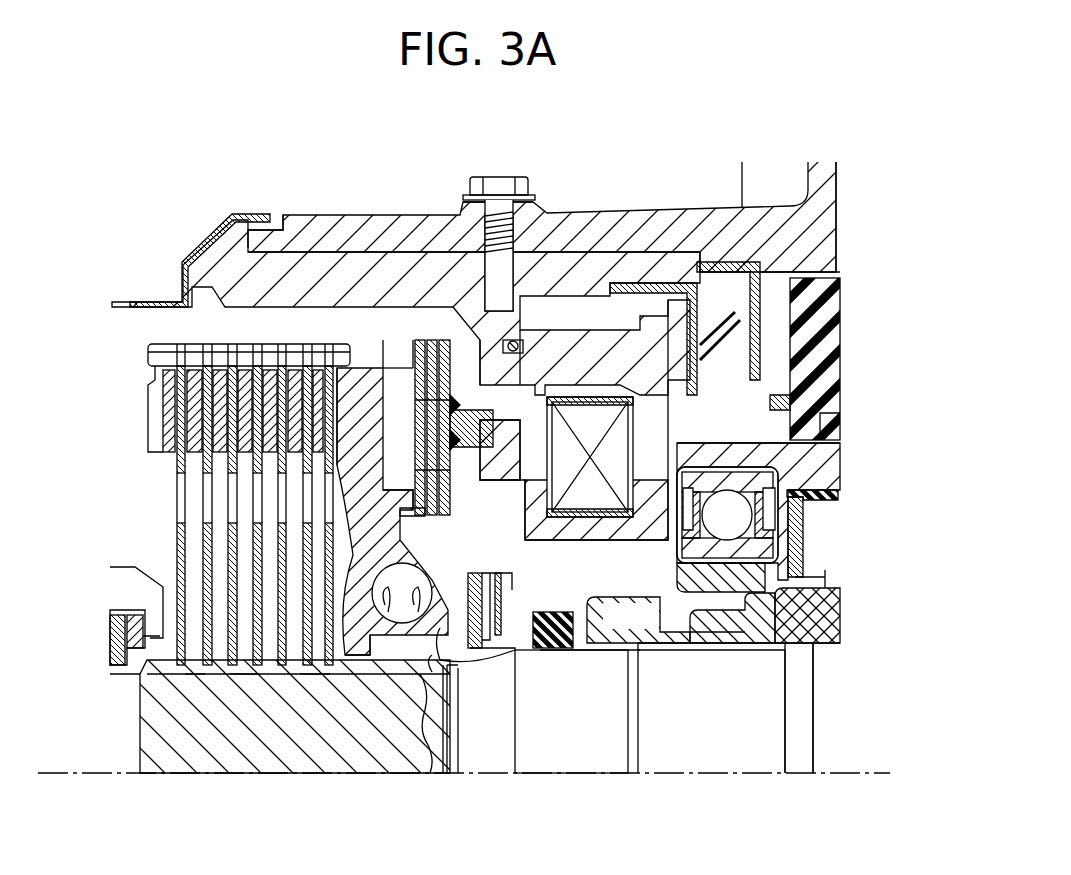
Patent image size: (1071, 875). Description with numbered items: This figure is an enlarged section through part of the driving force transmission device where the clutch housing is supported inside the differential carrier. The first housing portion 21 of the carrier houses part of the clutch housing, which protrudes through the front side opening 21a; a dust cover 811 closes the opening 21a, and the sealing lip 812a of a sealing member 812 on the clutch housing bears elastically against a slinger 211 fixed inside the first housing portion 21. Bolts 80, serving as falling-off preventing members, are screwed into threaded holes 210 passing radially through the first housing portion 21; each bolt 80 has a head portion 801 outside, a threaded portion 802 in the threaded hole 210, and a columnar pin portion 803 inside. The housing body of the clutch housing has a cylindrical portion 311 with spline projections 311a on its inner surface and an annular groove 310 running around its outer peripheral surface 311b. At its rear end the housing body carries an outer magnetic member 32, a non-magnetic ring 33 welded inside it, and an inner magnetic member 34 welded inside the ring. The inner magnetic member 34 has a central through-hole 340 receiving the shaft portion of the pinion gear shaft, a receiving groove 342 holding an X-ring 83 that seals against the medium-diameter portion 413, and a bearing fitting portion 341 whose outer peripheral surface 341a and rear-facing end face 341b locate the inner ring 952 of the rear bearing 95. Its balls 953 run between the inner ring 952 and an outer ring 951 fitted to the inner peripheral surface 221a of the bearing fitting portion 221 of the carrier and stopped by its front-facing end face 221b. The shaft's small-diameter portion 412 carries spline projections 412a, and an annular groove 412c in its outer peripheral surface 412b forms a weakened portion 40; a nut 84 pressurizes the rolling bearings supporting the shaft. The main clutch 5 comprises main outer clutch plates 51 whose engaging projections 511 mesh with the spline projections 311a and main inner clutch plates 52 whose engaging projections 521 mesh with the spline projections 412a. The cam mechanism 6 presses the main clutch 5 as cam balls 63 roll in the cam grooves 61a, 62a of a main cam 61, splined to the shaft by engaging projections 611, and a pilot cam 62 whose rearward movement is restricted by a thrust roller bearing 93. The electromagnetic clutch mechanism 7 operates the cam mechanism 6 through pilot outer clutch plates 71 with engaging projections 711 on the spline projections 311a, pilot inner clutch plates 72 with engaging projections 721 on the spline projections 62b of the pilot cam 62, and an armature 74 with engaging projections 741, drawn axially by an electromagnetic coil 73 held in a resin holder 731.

The first housing portion 21 is at (405, 232).
The front side opening 21a is at (232, 238).
The slinger 211 is at (700, 360).
The threaded hole 210 is at (518, 280).
The bolt 80 is at (470, 198).
The head portion 801 is at (503, 185).
The threaded portion 802 is at (496, 230).
The pin portion 803 is at (487, 292).
The cylindrical portion 311 is at (262, 292).
The spline projections 311a is at (160, 355).
The outer peripheral surface 311b is at (482, 300).
The annular groove 310 is at (516, 338).
The dust cover 811 is at (200, 255).
The sealing member 812 is at (745, 350).
The sealing lip 812a is at (745, 352).
The main clutch 5 is at (146, 374).
The main outer clutch plates 51 is at (175, 426).
The engaging projections 511 is at (217, 357).
The main inner clutch plates 52 is at (205, 567).
The engaging projections 521 is at (188, 672).
The cam mechanism 6 is at (333, 541).
The main cam 61 is at (240, 676).
The engaging projections 611 is at (272, 700).
The cam groove 61a is at (340, 674).
The pilot cam 62 is at (500, 655).
The cam groove 62a is at (400, 600).
The spline projections 62b is at (430, 512).
The cam balls 63 is at (355, 650).
The electromagnetic clutch mechanism 7 is at (698, 292).
The pilot outer clutch plates 71 is at (378, 340).
The engaging projections 711 is at (408, 338).
The pilot inner clutch plates 72 is at (432, 338).
The engaging projections 721 is at (500, 580).
The electromagnetic coil 73 is at (598, 400).
The holder 731 is at (823, 310).
The armature 74 is at (300, 330).
The engaging projections 741 is at (278, 327).
The outer magnetic member 32 is at (600, 360).
The non-magnetic ring 33 is at (565, 330).
The inner magnetic member 34 is at (690, 690).
The through-hole 340 is at (601, 641).
The bearing fitting portion 341 is at (818, 678).
The outer peripheral surface 341a is at (760, 710).
The end face 341b is at (712, 660).
The receiving groove 342 is at (565, 612).
The bearing fitting portion 221 is at (800, 392).
The inner peripheral surface 221a is at (846, 406).
The end face 221b is at (782, 487).
The outer ring 951 is at (840, 425).
The inner ring 952 is at (765, 553).
The balls 953 is at (772, 503).
The rear bearing 95 is at (818, 643).
The weakened portion 40 is at (472, 748).
The small-diameter portion 412 is at (143, 718).
The spline projections 412a is at (172, 742).
The outer peripheral surface 412b is at (431, 675).
The annular groove 412c is at (452, 727).
The medium-diameter portion 413 is at (628, 695).
The X-ring 83 is at (575, 663).
The nut 84 is at (814, 732).
The thrust roller bearing 93 is at (530, 663).